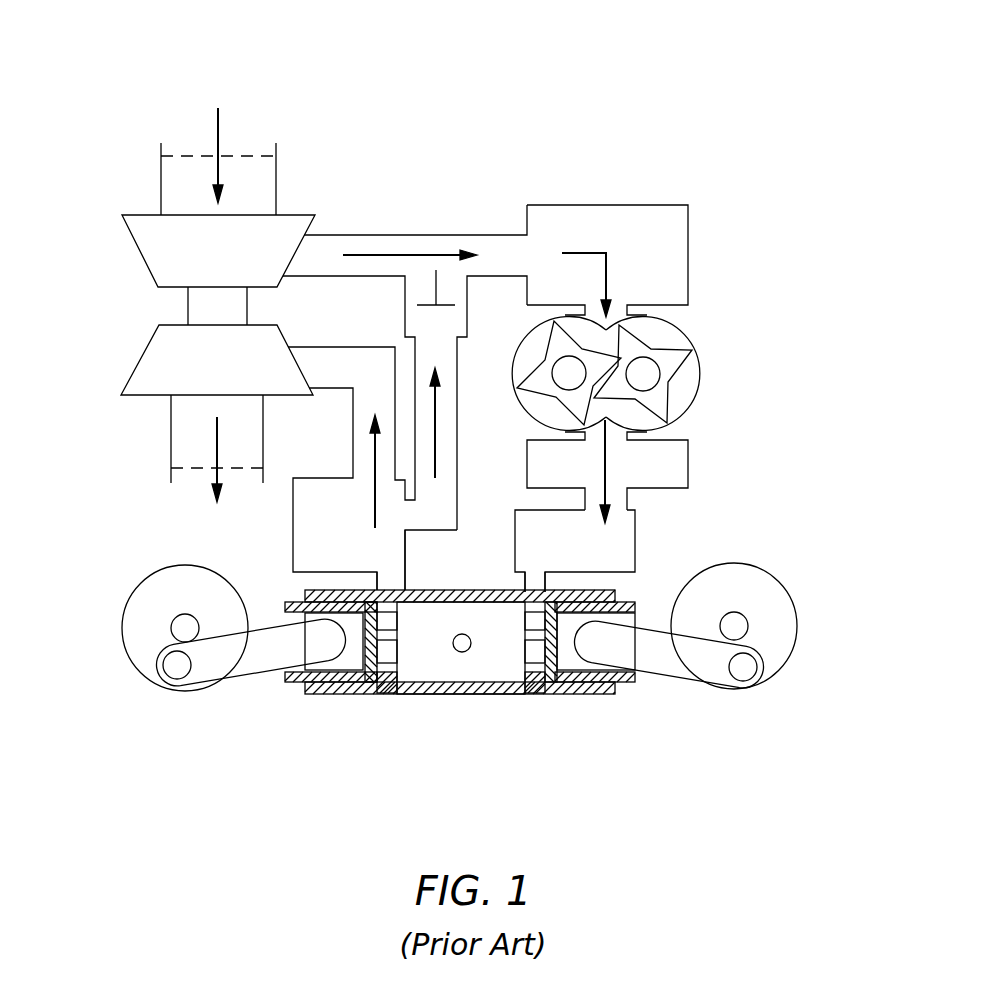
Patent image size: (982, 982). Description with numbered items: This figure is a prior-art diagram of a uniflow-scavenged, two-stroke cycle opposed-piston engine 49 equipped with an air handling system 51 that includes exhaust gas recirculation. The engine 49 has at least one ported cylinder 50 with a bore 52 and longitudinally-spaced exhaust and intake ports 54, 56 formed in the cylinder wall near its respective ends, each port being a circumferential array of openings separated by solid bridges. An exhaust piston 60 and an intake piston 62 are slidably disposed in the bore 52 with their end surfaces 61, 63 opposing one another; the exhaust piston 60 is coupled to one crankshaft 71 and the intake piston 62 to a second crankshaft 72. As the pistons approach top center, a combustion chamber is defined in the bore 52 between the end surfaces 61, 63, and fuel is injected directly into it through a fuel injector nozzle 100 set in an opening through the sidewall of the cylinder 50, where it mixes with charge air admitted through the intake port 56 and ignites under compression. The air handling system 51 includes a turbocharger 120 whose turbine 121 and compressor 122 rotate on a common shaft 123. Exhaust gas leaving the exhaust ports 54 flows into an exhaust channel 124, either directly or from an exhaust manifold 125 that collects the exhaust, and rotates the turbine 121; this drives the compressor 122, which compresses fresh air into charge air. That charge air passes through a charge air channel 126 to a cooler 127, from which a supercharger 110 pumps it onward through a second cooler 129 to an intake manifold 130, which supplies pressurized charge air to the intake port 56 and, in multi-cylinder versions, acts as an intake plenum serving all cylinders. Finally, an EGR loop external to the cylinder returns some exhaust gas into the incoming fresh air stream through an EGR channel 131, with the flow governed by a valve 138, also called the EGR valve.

The opposed-piston engine 49 is at (770, 474).
The ported cylinder 50 is at (428, 590).
The air handling system 51 is at (488, 66).
The bore 52 is at (481, 672).
The exhaust port 54 is at (385, 716).
The intake port 56 is at (537, 714).
The exhaust piston 60 is at (288, 686).
The end surface of exhaust piston 61 is at (393, 618).
The intake piston 62 is at (627, 600).
The end surface of intake piston 63 is at (533, 612).
The crankshaft 71 is at (185, 692).
The crankshaft 72 is at (735, 692).
The fuel injector nozzle 100 is at (462, 634).
The supercharger 110 is at (680, 330).
The turbocharger 120 is at (124, 308).
The turbine 121 is at (135, 366).
The compressor 122 is at (138, 250).
The common shaft 123 is at (247, 303).
The exhaust channel 124 is at (333, 420).
The exhaust manifold 125 is at (293, 537).
The charge air channel 126 is at (393, 235).
The cooler 127 is at (688, 263).
The cooler 129 is at (688, 458).
The intake manifold 130 is at (635, 548).
The EGR channel 131 is at (457, 415).
The valve 138 is at (436, 283).